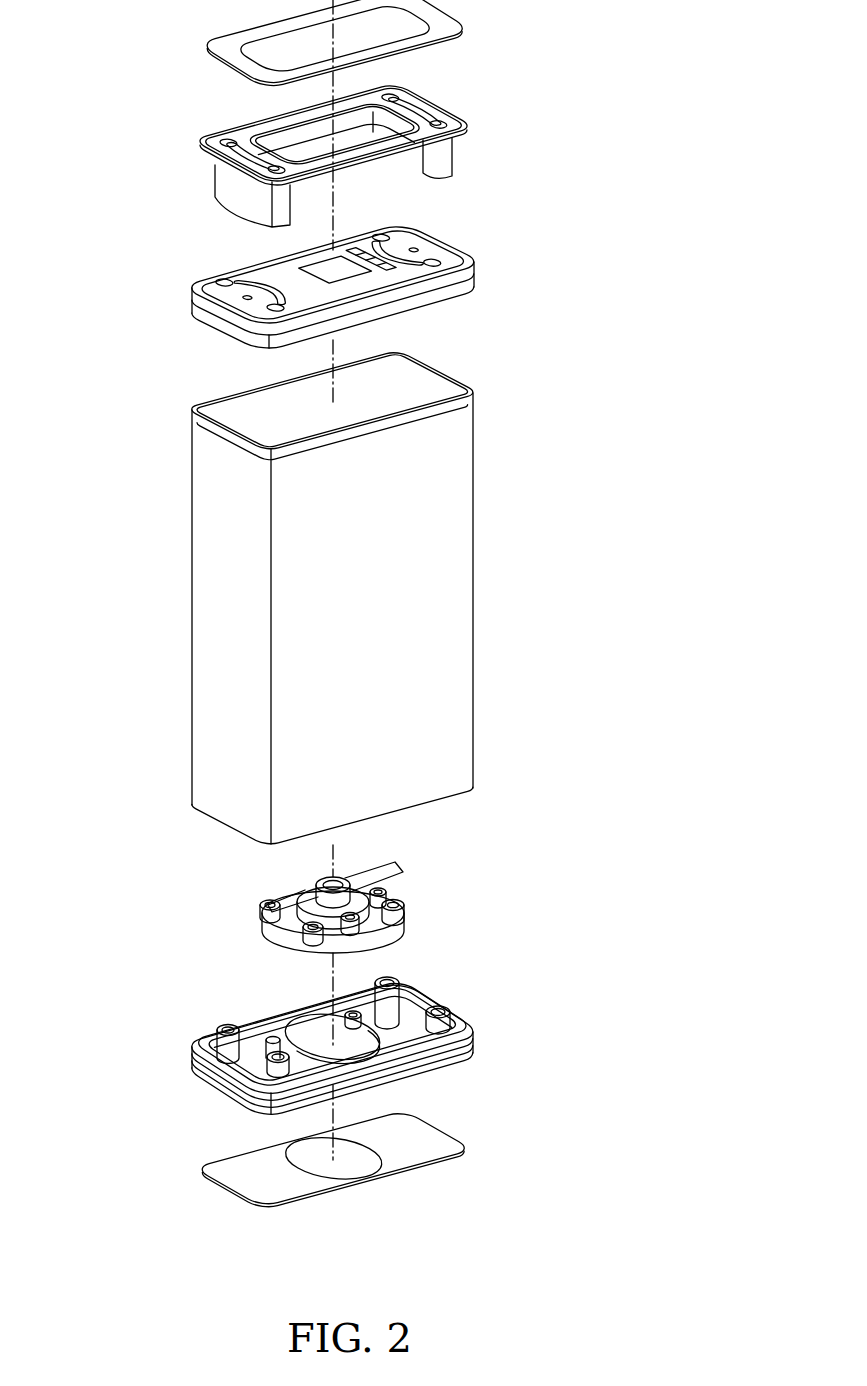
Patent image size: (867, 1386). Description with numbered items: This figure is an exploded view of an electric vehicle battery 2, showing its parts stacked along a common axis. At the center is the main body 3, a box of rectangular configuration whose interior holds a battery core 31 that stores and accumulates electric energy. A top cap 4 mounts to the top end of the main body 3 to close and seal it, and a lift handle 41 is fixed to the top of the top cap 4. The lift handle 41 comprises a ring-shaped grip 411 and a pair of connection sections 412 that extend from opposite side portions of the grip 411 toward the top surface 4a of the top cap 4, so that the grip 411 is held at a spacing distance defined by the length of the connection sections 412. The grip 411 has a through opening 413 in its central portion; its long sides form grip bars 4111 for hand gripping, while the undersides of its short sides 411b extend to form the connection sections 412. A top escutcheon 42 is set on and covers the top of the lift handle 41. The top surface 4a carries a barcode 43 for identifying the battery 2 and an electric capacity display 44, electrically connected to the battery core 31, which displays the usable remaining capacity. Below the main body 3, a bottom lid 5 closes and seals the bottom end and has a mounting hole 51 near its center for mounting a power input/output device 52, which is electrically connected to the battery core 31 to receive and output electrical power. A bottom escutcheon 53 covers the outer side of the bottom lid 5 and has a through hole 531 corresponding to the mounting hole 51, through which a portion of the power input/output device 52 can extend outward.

The battery 2 is at (128, 861).
The top escutcheon 42 is at (213, 45).
The lift handle 41 is at (203, 168).
The grip 411 is at (470, 128).
The grip bars 4111 is at (264, 132).
The short sides 411b is at (400, 95).
The through opening 413 is at (232, 152).
The connection sections 412 is at (447, 162).
The top cap 4 is at (192, 298).
The top surface 4a is at (268, 272).
The barcode 43 is at (325, 276).
The electric capacity display 44 is at (410, 263).
The main body 3 is at (458, 594).
The battery core 31 is at (412, 388).
The power input/output device 52 is at (405, 905).
The bottom lid 5 is at (465, 1030).
The mounting hole 51 is at (310, 1037).
The bottom escutcheon 53 is at (232, 1185).
The through hole 531 is at (355, 1160).